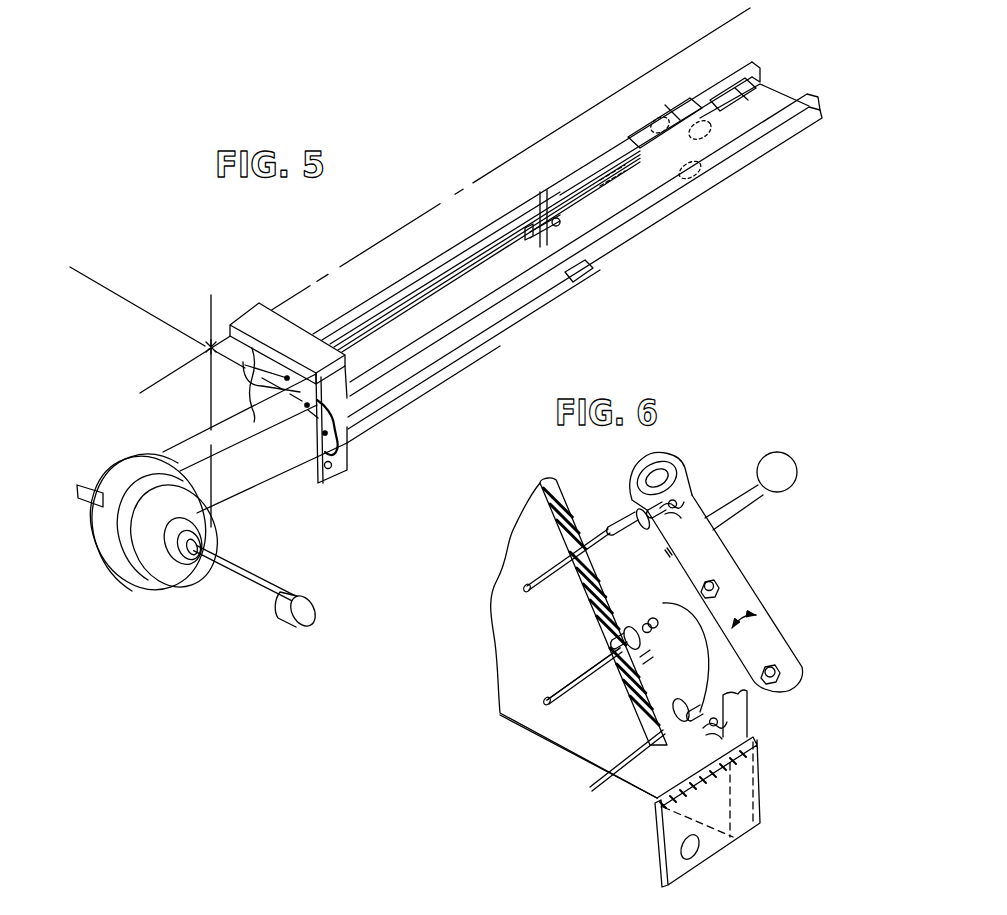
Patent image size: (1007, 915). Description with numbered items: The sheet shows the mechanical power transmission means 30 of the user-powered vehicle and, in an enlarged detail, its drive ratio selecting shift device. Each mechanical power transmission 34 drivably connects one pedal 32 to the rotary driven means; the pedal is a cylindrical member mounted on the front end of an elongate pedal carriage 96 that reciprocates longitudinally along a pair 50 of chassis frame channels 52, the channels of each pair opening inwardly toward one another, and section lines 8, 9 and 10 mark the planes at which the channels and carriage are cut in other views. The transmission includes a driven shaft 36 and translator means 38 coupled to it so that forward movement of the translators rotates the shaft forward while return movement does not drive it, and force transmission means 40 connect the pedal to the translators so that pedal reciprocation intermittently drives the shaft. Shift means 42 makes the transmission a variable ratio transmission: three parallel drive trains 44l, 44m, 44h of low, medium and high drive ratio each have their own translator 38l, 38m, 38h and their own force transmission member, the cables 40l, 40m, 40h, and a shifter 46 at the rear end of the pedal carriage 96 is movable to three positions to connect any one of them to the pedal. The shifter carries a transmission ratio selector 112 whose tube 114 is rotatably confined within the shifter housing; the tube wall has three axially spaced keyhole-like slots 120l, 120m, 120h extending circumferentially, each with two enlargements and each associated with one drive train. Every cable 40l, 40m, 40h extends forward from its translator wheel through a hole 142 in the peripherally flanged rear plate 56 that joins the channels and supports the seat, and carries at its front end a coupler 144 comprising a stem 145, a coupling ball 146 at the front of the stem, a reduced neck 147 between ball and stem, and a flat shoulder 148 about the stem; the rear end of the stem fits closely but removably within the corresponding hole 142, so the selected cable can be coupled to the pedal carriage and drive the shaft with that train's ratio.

In FIG. 5, the section line 8- 8 is at (653, 92).
In FIG. 5, the section line 9- 9 is at (547, 160).
In FIG. 5, the section line 10- 10 is at (443, 227).
In FIG. 5, the mechanical power transmission means 30 is at (258, 265).
In FIG. 5, the user actuated machine driving member 32 is at (752, 110).
In FIG. 5, the mechanical power transmission 34 is at (408, 266).
In FIG. 6, the mechanical power transmission 34 is at (513, 607).
In FIG. 5, the driven shaft 36 is at (233, 567).
In FIG. 5, the translator means 38 is at (90, 537).
In FIG. 5, the translator 38l is at (92, 513).
In FIG. 5, the translator 38m is at (143, 568).
In FIG. 5, the translator 38h is at (170, 558).
In FIG. 5, the force transmission means 40 is at (192, 433).
In FIG. 5, the shift means 42 is at (540, 192).
In FIG. 6, the shift means 42 is at (720, 427).
In FIG. 6, the drive train 44h is at (540, 560).
In FIG. 6, the drive train 44m is at (567, 680).
In FIG. 6, the drive train 44l is at (627, 757).
In FIG. 6, the force transmission member 40h is at (527, 585).
In FIG. 6, the force transmission member 40m is at (545, 700).
In FIG. 6, the force transmission member 40l is at (603, 780).
In FIG. 6, the shifter 46 is at (758, 568).
In FIG. 5, the pair of channels 50 is at (722, 183).
In FIG. 5, the channel 52 is at (757, 66).
In FIG. 5, the peripherally flanged plate 56 is at (204, 350).
In FIG. 6, the peripherally flanged plate 56 is at (507, 638).
In FIG. 5, the pedal carriage 96 is at (657, 157).
In FIG. 6, the transmission ratio selector 112 is at (785, 445).
In FIG. 6, the selector tube 114 is at (777, 647).
In FIG. 6, the keyhole-like slot 120l is at (692, 490).
In FIG. 6, the keyhole-like slot 120m is at (710, 577).
In FIG. 6, the keyhole-like slot 120h is at (783, 680).
In FIG. 6, the cable hole 142 is at (583, 560).
In FIG. 6, the coupler 144 is at (612, 513).
In FIG. 6, the stem 145 is at (610, 533).
In FIG. 6, the coupling ball 146 is at (660, 604).
In FIG. 6, the reduced neck 147 is at (655, 631).
In FIG. 6, the flat shoulder 148 is at (645, 495).